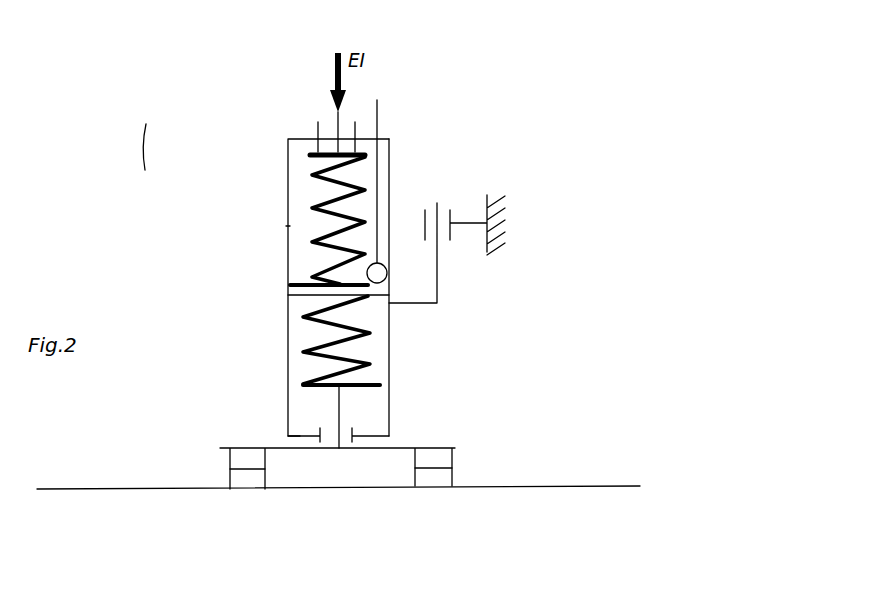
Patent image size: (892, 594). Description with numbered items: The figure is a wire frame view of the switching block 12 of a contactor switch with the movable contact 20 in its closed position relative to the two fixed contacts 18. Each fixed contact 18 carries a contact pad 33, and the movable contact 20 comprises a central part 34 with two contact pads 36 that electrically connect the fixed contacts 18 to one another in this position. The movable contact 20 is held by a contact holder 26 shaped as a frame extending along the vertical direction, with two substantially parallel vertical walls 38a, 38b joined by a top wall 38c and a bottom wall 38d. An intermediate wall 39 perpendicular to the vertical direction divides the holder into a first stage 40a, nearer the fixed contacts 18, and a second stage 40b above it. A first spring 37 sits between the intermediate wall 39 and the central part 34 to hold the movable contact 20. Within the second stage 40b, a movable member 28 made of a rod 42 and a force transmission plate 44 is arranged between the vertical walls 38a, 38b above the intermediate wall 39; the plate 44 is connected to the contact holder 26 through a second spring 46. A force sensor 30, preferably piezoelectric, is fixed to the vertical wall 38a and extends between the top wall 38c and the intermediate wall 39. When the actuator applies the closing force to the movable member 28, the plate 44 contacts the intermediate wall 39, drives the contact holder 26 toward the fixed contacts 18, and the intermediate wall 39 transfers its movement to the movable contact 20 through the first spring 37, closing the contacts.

The switching block 12 is at (432, 343).
The fixed contacts 18 is at (168, 489).
The movable contact 20 is at (368, 441).
The contact holder 26 is at (272, 388).
The movable member 28 is at (131, 147).
The force sensor 30 is at (384, 161).
The contact pad 33 is at (230, 480).
The central part 34 is at (372, 382).
The contact pads 36 is at (228, 463).
The first spring 37 is at (300, 328).
The vertical wall 38a is at (288, 225).
The vertical wall 38b is at (389, 193).
The top wall 38c is at (364, 136).
The bottom wall 38d is at (298, 440).
The intermediate wall 39 is at (287, 292).
The first stage 40a is at (310, 362).
The second stage 40b is at (300, 198).
The rod 42 is at (336, 134).
The force transmission plate 44 is at (307, 282).
The second spring 46 is at (316, 160).